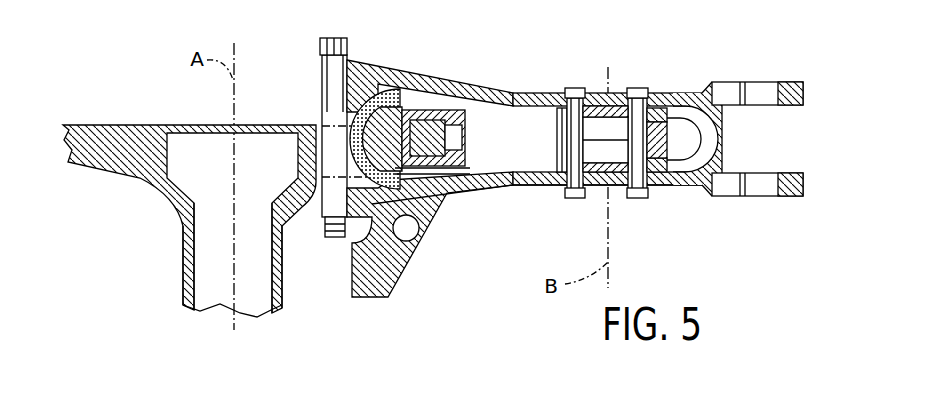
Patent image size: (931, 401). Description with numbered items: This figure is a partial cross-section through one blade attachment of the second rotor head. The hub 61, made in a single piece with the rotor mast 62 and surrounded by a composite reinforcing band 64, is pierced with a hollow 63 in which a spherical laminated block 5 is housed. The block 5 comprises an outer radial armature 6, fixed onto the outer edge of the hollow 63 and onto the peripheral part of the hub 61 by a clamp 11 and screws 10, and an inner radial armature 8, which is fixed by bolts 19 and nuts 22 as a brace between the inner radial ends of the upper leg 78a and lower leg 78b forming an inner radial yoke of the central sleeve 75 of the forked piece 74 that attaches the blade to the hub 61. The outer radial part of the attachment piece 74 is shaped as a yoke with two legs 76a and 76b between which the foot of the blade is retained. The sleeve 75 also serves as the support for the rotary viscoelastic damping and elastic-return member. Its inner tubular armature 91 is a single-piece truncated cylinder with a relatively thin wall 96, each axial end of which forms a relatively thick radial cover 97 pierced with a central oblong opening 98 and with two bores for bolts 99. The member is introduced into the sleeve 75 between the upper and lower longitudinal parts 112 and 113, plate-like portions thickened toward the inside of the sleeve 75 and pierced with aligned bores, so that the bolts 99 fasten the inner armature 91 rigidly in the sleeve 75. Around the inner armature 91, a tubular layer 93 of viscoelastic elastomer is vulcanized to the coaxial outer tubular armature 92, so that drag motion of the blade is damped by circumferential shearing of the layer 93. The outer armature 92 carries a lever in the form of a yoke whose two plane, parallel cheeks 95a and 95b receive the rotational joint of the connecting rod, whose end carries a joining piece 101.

The spherical laminated block 5 is at (428, 98).
The outer radial armature 6 is at (424, 112).
The inner radial armature 8 is at (430, 152).
The screw 10 is at (440, 195).
The clamp 11 is at (448, 112).
The bolt 19 is at (333, 78).
The nut 22 is at (333, 238).
The hub 61 is at (140, 140).
The rotor mast 62 is at (192, 280).
The hollow 63 is at (318, 124).
The composite reinforcing band 64 is at (480, 108).
The forked piece 74 is at (533, 92).
The central sleeve 75 is at (533, 186).
The leg 76a is at (793, 82).
The leg 76b is at (793, 196).
The upper leg 78a is at (381, 84).
The lower leg 78b is at (423, 200).
The inner tubular armature 91 is at (593, 172).
The outer tubular armature 92 is at (560, 122).
The tubular layer of viscoelastic elastomer 93 is at (563, 143).
The cheek 95a is at (663, 120).
The cheek 95b is at (673, 180).
The thin wall 96 is at (660, 170).
The radial cover 97 is at (577, 97).
The central oblong opening 98 is at (612, 117).
The bolt 99 is at (638, 107).
The joining piece 101 is at (672, 142).
The upper longitudinal part 112 is at (607, 113).
The lower longitudinal part 113 is at (615, 185).